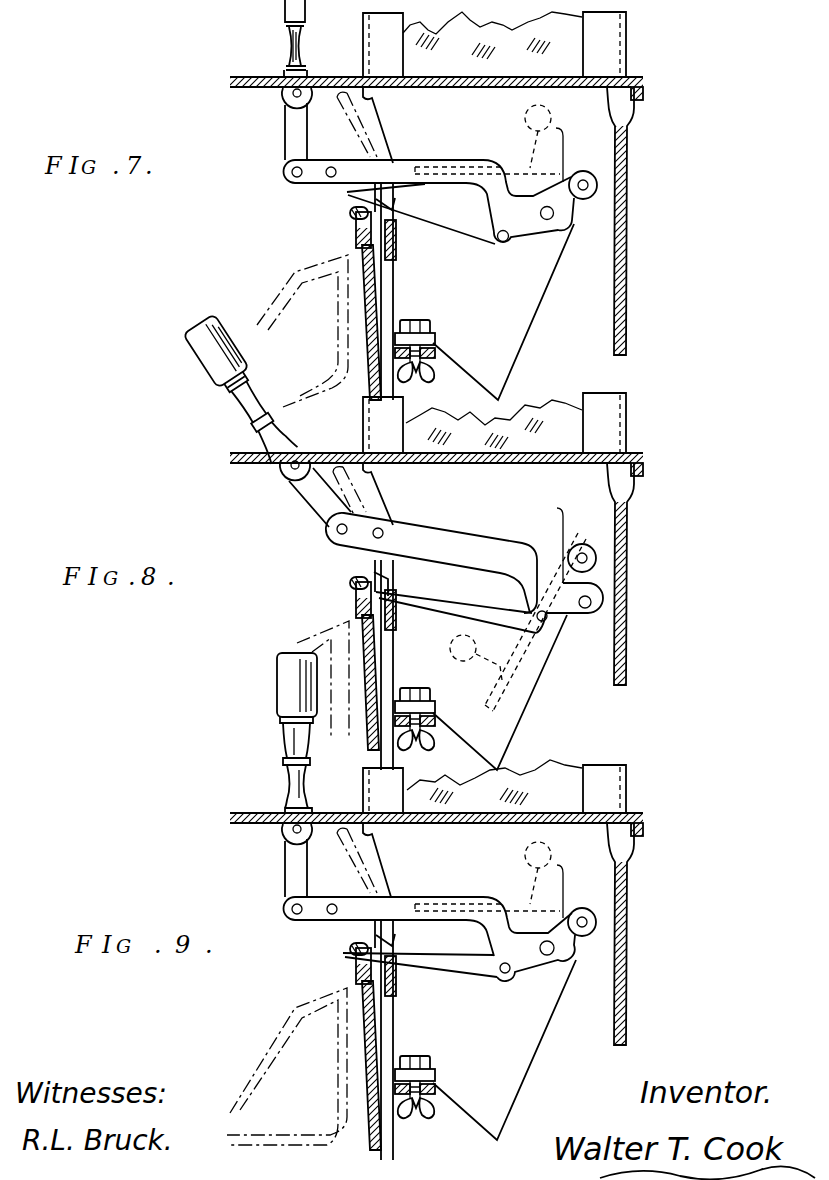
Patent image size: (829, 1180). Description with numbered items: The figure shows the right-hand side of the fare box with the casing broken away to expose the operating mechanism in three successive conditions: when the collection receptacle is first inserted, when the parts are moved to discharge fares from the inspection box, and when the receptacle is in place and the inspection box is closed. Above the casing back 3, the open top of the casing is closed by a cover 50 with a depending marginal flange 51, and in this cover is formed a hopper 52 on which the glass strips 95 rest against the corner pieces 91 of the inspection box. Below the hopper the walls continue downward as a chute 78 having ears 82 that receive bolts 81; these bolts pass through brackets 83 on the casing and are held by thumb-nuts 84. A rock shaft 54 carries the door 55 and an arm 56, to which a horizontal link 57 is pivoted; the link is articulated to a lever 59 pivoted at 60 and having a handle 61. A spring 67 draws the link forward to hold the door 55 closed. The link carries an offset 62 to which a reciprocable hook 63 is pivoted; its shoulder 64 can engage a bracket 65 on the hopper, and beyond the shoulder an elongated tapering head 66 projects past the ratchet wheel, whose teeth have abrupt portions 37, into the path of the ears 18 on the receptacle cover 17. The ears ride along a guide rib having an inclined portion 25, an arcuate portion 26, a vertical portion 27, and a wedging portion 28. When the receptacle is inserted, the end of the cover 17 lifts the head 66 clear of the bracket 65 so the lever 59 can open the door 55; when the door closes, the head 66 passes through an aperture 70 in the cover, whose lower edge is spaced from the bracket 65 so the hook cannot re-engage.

In FIG. 7, the back 3 is at (621, 251).
In FIG. 8, the back 3 is at (622, 662).
In FIG. 9, the back 3 is at (622, 1011).
In FIG. 7, the cover 17 is at (368, 300).
In FIG. 8, the cover 17 is at (368, 698).
In FIG. 9, the cover 17 is at (371, 1062).
In FIG. 7, the ear 18 is at (350, 214).
In FIG. 8, the ear 18 is at (347, 585).
In FIG. 9, the ear 18 is at (352, 946).
In FIG. 7, the inclined portion 25 is at (285, 305).
In FIG. 7, the arcuate portion 26 is at (312, 290).
In FIG. 8, the vertical portion 27 is at (348, 692).
In FIG. 9, the vertical portion 27 is at (343, 1038).
In FIG. 7, the wedging portion 28 is at (323, 370).
In FIG. 7, the abrupt portions 37 is at (393, 294).
In FIG. 8, the abrupt portions 37 is at (392, 672).
In FIG. 9, the abrupt portions 37 is at (380, 1040).
In FIG. 7, the cover 50 is at (340, 77).
In FIG. 8, the cover 50 is at (336, 453).
In FIG. 9, the cover 50 is at (353, 813).
In FIG. 7, the marginal lip or flange 51 is at (643, 100).
In FIG. 8, the marginal lip or flange 51 is at (643, 469).
In FIG. 9, the marginal lip or flange 51 is at (648, 828).
In FIG. 7, the hopper 52 is at (481, 106).
In FIG. 8, the hopper 52 is at (491, 485).
In FIG. 9, the hopper 52 is at (488, 842).
In FIG. 7, the rock shaft 54 is at (583, 180).
In FIG. 8, the rock shaft 54 is at (581, 553).
In FIG. 9, the rock shaft 54 is at (583, 910).
In FIG. 7, the trap or door 55 is at (538, 136).
In FIG. 8, the trap or door 55 is at (518, 622).
In FIG. 9, the trap or door 55 is at (538, 873).
In FIG. 7, the arm 56 is at (578, 198).
In FIG. 8, the arm 56 is at (593, 582).
In FIG. 9, the arm 56 is at (577, 940).
In FIG. 7, the horizontal link 57 is at (402, 166).
In FIG. 8, the horizontal link 57 is at (432, 537).
In FIG. 9, the horizontal link 57 is at (415, 900).
In FIG. 7, the lever 59 is at (298, 143).
In FIG. 8, the lever 59 is at (325, 516).
In FIG. 9, the lever 59 is at (308, 865).
In FIG. 7, the pivot 60 is at (292, 93).
In FIG. 8, the pivot 60 is at (291, 466).
In FIG. 9, the pivot 60 is at (295, 829).
In FIG. 7, the handle 61 is at (288, 45).
In FIG. 8, the handle 61 is at (207, 370).
In FIG. 9, the handle 61 is at (288, 728).
In FIG. 7, the offset 62 is at (522, 239).
In FIG. 8, the offset 62 is at (548, 620).
In FIG. 9, the offset 62 is at (512, 975).
In FIG. 7, the reciprocable hook 63 is at (453, 216).
In FIG. 8, the reciprocable hook 63 is at (487, 603).
In FIG. 9, the reciprocable hook 63 is at (460, 947).
In FIG. 7, the shoulder 64 is at (393, 214).
In FIG. 8, the shoulder 64 is at (420, 607).
In FIG. 9, the shoulder 64 is at (385, 940).
In FIG. 7, the bracket 65 is at (397, 247).
In FIG. 8, the bracket 65 is at (397, 622).
In FIG. 9, the bracket 65 is at (396, 990).
In FIG. 7, the tapering head 66 is at (372, 184).
In FIG. 8, the tapering head 66 is at (403, 597).
In FIG. 9, the tapering head 66 is at (345, 954).
In FIG. 7, the spring 67 is at (266, 140).
In FIG. 8, the spring 67 is at (273, 500).
In FIG. 9, the spring 67 is at (267, 873).
In FIG. 7, the aperture 70 is at (356, 232).
In FIG. 8, the aperture 70 is at (357, 593).
In FIG. 9, the aperture 70 is at (360, 972).
In FIG. 7, the chute 78 is at (536, 305).
In FIG. 8, the chute 78 is at (532, 692).
In FIG. 9, the chute 78 is at (535, 1040).
In FIG. 7, the bolts 81 is at (436, 342).
In FIG. 8, the bolts 81 is at (415, 707).
In FIG. 9, the bolts 81 is at (437, 1078).
In FIG. 7, the ears 82 is at (432, 326).
In FIG. 8, the ears 82 is at (415, 694).
In FIG. 9, the ears 82 is at (433, 1068).
In FIG. 7, the brackets 83 is at (432, 360).
In FIG. 8, the brackets 83 is at (415, 721).
In FIG. 9, the brackets 83 is at (433, 1097).
In FIG. 7, the thumb-nuts 84 is at (414, 381).
In FIG. 8, the thumb-nuts 84 is at (416, 740).
In FIG. 9, the thumb-nuts 84 is at (415, 1117).
In FIG. 7, the corner piece 91 is at (622, 55).
In FIG. 8, the corner piece 91 is at (617, 430).
In FIG. 9, the corner piece 91 is at (620, 791).
In FIG. 8, the plate glass strips 95 is at (547, 414).
In FIG. 9, the plate glass strips 95 is at (552, 776).